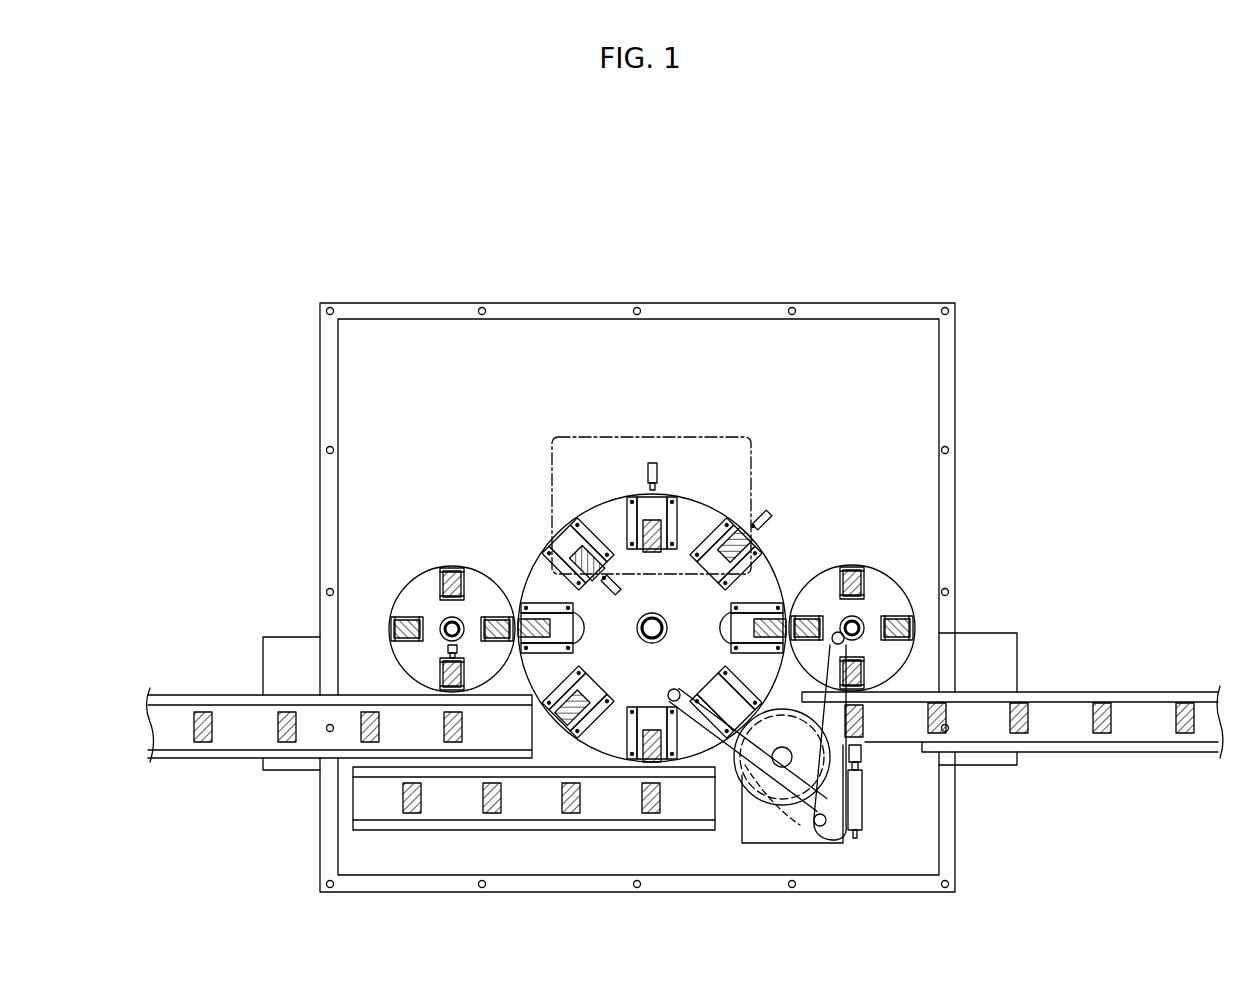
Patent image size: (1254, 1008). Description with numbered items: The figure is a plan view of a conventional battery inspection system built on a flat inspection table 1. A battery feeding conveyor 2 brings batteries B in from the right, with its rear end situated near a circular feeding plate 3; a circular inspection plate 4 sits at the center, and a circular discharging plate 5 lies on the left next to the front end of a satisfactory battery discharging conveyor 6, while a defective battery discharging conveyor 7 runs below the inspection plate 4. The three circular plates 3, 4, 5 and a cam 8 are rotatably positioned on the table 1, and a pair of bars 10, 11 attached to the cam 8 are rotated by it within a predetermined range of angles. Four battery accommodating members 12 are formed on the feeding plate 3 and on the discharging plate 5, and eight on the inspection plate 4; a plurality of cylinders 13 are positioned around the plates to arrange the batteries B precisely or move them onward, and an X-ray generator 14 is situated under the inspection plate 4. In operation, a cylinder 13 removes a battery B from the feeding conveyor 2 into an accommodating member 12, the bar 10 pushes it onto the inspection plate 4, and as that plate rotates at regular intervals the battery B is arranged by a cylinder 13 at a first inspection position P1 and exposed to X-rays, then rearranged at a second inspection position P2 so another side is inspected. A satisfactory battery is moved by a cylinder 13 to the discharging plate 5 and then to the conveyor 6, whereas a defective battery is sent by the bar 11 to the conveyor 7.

The inspection table 1 is at (870, 303).
The battery feeding conveyor 2 is at (1170, 692).
The circular feeding plate 3 is at (876, 575).
The circular inspection plate 4 is at (781, 575).
The circular discharging plate 5 is at (485, 578).
The satisfactory battery discharging conveyor 6 is at (188, 695).
The defective battery discharging conveyor 7 is at (447, 830).
The cam 8 is at (738, 786).
The bar 10 is at (857, 722).
The bar 11 is at (700, 732).
The battery accommodating member 12 is at (633, 512).
The cylinder 13 is at (656, 465).
The X-ray generator 14 is at (580, 437).
The battery B is at (452, 568).
The first inspection position P1 is at (762, 530).
The second inspection position P2 is at (660, 490).